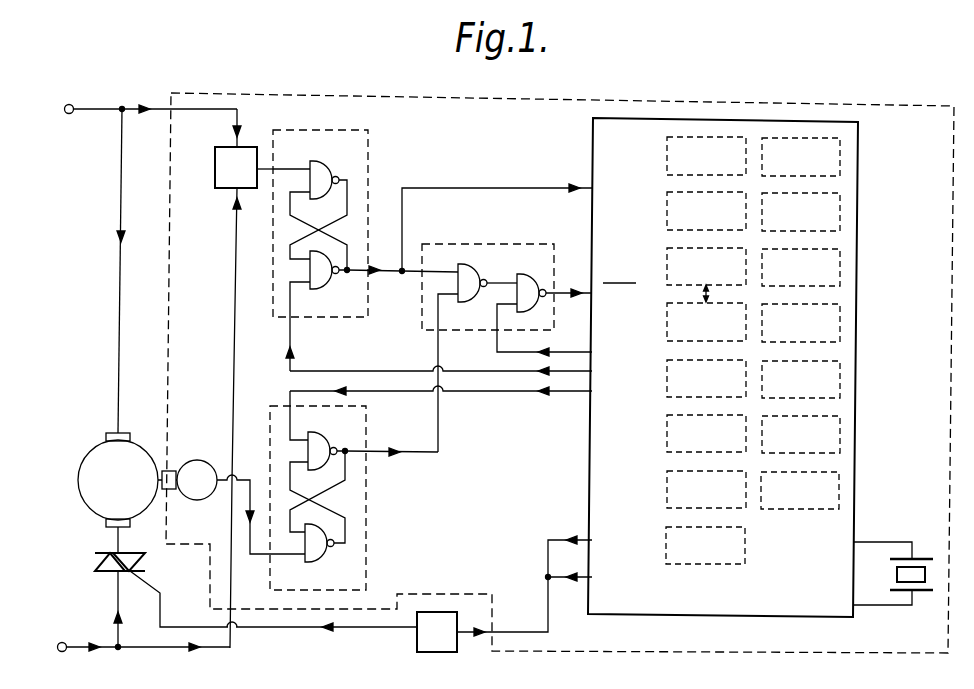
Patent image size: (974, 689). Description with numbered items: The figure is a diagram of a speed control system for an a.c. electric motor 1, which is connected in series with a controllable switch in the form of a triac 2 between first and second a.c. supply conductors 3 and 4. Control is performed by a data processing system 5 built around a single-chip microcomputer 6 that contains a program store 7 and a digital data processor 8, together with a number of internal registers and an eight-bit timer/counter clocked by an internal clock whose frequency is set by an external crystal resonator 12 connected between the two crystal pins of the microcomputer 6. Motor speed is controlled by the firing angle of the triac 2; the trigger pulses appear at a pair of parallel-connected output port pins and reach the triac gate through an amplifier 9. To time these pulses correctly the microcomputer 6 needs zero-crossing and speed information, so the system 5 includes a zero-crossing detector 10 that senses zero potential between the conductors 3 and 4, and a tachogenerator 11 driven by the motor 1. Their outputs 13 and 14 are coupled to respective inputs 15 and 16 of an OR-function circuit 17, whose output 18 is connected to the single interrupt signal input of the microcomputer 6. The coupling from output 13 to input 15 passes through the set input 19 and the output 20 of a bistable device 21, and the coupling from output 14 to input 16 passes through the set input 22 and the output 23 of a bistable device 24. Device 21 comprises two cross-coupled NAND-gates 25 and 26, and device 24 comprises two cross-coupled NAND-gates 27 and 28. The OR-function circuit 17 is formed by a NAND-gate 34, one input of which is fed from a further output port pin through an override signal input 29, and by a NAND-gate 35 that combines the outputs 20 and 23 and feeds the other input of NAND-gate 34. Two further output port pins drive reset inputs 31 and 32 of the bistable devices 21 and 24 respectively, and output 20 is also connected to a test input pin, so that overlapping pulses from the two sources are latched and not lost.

The a.c. electric motor 1 is at (78, 478).
The controllable switch (triac) 2 is at (100, 553).
The first a.c. supply conductor 3 is at (70, 113).
The second a.c. supply conductor 4 is at (62, 642).
The data processing system 5 is at (518, 654).
The single-chip microcomputer 6 is at (743, 365).
The program store 7 is at (706, 156).
The digital data processor 8 is at (706, 211).
The amplifier 9 is at (409, 594).
The zero crossing detector 10 is at (236, 378).
The tachogenerator 11 is at (200, 461).
The crystal resonator 12 is at (912, 589).
The output of zero crossing detector 13 is at (262, 171).
The output of tachogenerator 14 is at (218, 490).
The first input of OR-function circuit 15 is at (420, 274).
The second input of OR-function circuit 16 is at (432, 333).
The OR-function circuit 17 is at (488, 268).
The output of OR-function circuit 18 is at (556, 290).
The set input of bistable device 21 19 is at (273, 168).
The output of bistable device 21 20 is at (371, 268).
The bistable device 21 is at (320, 223).
The set input of bistable device 24 22 is at (270, 556).
The output of bistable device 24 23 is at (378, 450).
The bistable device 24 is at (336, 498).
The NAND-gate 25 is at (325, 167).
The NAND-gate 26 is at (329, 283).
The NAND-gate 27 is at (327, 556).
The NAND-gate 28 is at (325, 440).
The override signal input 29 is at (497, 332).
The reset input of bistable device 21 31 is at (292, 322).
The reset input of bistable device 24 32 is at (283, 404).
The NAND-gate 34 is at (528, 283).
The NAND-gate 35 is at (477, 274).